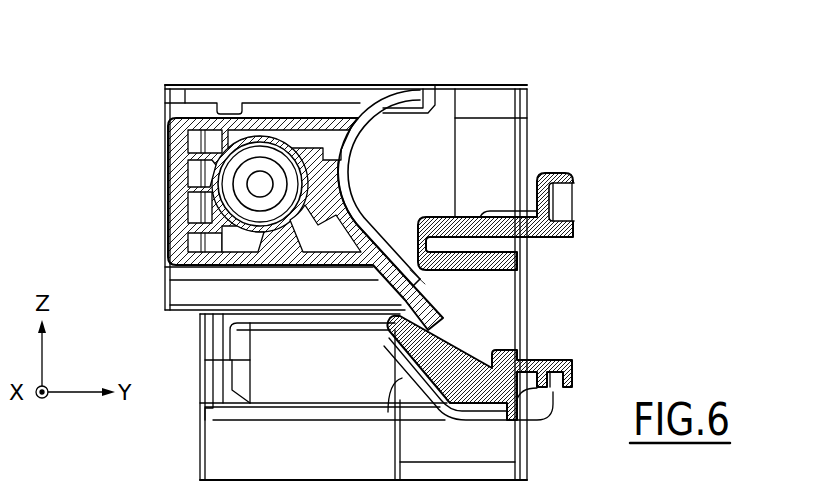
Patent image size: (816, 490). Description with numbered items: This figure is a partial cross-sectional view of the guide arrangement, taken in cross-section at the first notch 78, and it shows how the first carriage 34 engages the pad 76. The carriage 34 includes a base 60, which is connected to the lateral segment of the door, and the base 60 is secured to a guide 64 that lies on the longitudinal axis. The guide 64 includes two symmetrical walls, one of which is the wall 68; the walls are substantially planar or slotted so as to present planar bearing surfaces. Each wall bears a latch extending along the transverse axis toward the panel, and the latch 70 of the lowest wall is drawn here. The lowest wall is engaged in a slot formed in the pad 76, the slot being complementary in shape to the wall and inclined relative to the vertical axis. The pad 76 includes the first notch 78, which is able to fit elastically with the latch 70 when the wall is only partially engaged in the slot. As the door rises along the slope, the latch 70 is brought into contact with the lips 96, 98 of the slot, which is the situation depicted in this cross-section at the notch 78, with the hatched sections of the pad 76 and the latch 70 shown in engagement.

The first carriage 34 is at (138, 203).
The base 60 is at (196, 110).
The guide 64 is at (337, 148).
The wall 68 is at (373, 286).
The latch 70 is at (420, 288).
The pad 76 is at (565, 203).
The first notch 78 is at (483, 271).
The lip 96 is at (390, 333).
The lip 98 is at (509, 208).